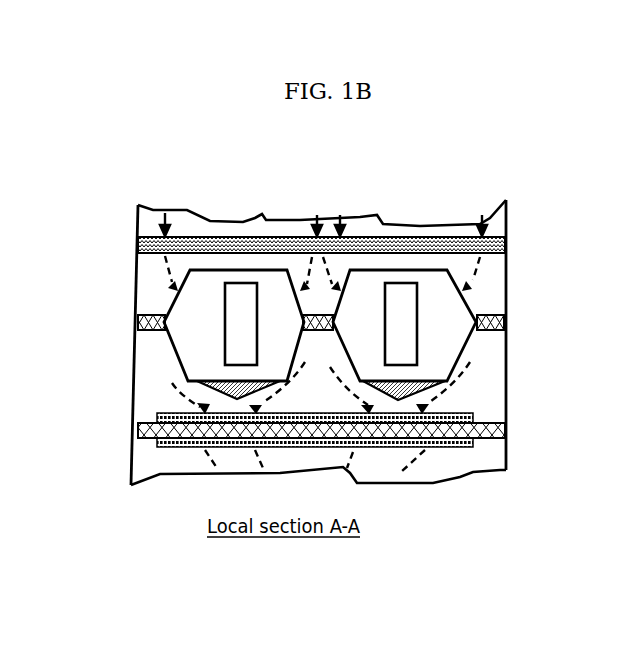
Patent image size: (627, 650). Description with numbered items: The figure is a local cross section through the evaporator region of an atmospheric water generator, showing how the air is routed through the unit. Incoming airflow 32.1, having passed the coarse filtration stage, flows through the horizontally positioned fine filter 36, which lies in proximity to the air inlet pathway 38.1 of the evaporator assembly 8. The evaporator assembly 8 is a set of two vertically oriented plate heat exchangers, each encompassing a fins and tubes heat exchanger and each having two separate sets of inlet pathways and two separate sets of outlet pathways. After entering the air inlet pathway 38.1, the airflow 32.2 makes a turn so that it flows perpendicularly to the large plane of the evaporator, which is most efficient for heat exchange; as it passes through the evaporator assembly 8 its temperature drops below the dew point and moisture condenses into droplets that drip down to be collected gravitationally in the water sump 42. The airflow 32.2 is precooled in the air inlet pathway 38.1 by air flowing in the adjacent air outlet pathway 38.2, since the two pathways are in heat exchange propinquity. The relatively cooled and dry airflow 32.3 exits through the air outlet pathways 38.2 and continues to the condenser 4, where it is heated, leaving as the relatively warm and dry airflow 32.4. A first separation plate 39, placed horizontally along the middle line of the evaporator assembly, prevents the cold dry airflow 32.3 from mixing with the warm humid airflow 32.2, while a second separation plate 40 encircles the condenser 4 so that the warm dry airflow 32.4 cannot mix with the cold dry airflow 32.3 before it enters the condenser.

The airflow 32.1 is at (552, 191).
The airflow 32.2 is at (480, 277).
The airflow 32.3 is at (460, 378).
The airflow 32.4 is at (350, 472).
The evaporator assembly 8 is at (240, 312).
The fine filter 36 is at (266, 221).
The air inlet pathway 38.1 is at (307, 282).
The air outlet pathway 38.2 is at (165, 342).
The first separation plate 39 is at (312, 313).
The water sump 42 is at (138, 245).
The condenser 4 is at (133, 398).
The second separation plate 40 is at (138, 430).